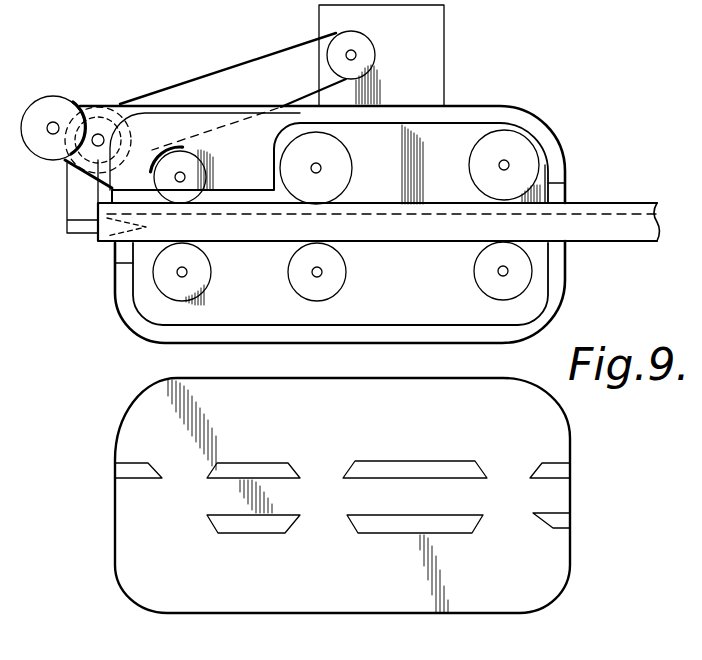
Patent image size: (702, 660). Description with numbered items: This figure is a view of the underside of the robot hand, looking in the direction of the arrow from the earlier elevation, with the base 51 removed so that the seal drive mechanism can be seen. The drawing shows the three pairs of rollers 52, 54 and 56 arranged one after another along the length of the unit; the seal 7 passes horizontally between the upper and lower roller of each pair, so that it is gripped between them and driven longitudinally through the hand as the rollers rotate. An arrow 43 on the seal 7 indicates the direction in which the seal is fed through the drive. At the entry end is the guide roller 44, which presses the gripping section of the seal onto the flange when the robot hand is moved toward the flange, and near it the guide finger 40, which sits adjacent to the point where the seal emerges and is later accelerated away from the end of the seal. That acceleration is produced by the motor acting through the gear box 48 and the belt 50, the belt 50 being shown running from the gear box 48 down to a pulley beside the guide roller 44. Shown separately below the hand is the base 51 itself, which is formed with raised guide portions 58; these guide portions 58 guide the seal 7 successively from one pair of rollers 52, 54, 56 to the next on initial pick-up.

The seal 7 is at (633, 203).
The guide finger 40 is at (70, 189).
The feed direction arrow 43 is at (113, 248).
The guide roller 44 is at (56, 98).
The gear box 48 is at (438, 46).
The belt 50 is at (233, 66).
The base 51 is at (334, 592).
The pair of rollers 52 is at (531, 172).
The pair of rollers 54 is at (337, 172).
The pair of rollers 56 is at (205, 172).
The raised guide portions 58 is at (460, 524).